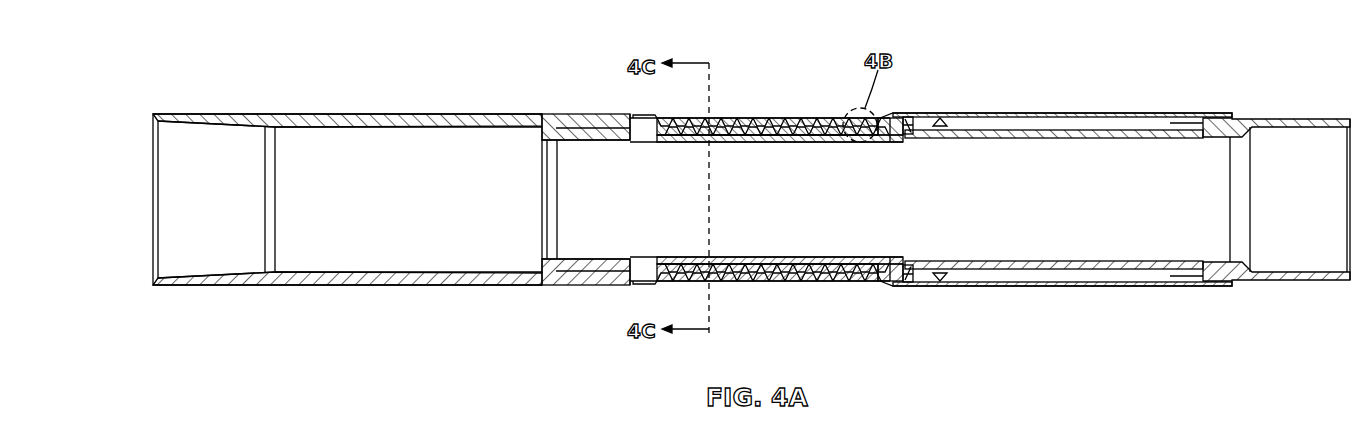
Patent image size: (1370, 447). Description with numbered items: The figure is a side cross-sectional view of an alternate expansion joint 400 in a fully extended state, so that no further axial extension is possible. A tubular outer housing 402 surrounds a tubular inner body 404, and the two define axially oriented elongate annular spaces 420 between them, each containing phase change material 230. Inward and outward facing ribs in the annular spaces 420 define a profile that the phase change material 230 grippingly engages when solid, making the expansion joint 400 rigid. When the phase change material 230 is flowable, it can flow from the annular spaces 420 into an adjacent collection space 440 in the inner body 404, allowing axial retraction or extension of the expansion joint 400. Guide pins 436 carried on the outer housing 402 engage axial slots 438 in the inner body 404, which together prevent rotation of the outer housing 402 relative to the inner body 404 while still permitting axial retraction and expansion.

The expansion joint 400 is at (250, 74).
The tubular outer housing 402 is at (493, 287).
The tubular inner body 404 is at (995, 257).
The phase change material 230 is at (735, 118).
The axially oriented elongate annular spaces 420 is at (737, 284).
The guide pins 436 is at (913, 117).
The axial slots 438 is at (1000, 128).
The collection space 440 is at (1118, 117).